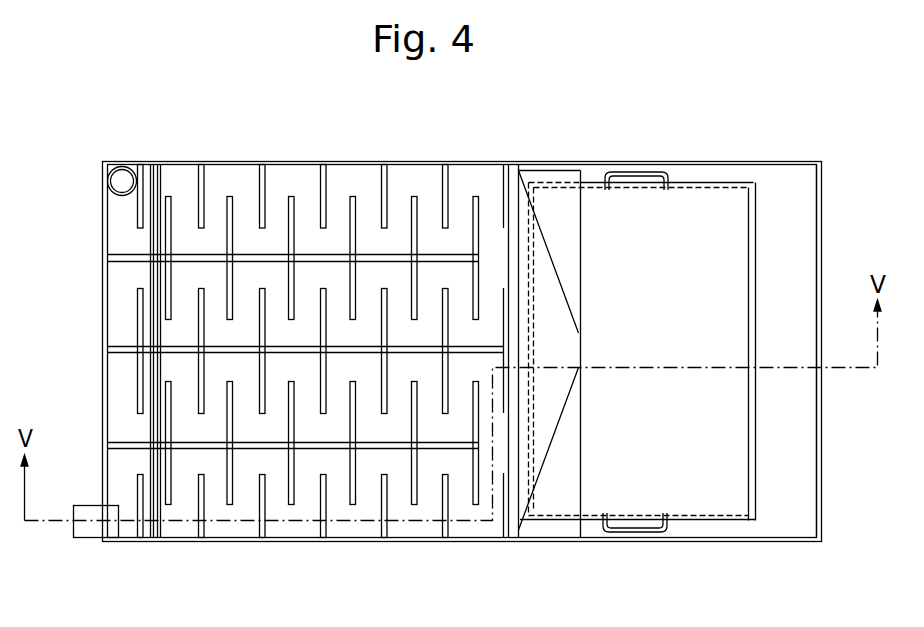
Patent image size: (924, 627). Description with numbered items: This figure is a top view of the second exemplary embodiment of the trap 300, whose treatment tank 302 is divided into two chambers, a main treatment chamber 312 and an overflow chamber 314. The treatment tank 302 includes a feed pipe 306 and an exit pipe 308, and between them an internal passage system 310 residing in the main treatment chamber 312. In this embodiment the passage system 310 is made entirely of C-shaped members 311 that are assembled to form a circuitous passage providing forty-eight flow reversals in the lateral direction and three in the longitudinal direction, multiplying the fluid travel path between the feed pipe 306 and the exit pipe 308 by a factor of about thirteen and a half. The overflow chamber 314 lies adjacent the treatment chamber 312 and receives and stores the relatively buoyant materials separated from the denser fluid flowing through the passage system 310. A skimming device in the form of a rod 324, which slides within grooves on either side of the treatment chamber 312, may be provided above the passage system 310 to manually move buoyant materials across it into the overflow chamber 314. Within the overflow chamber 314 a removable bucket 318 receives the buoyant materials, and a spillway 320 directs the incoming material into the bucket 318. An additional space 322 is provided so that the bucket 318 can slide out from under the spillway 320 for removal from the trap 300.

The trap 300 is at (521, 122).
The treatment tank 302 is at (318, 540).
The feed pipe 306 is at (122, 175).
The exit pipe 308 is at (87, 528).
The internal passage system 310 is at (279, 518).
The C-shaped members 311 is at (470, 475).
The main treatment chamber 312 is at (247, 195).
The overflow chamber 314 is at (705, 218).
The removable bucket 318 is at (703, 520).
The spillway 320 is at (567, 463).
The additional space 322 is at (805, 342).
The rod 324 is at (165, 180).